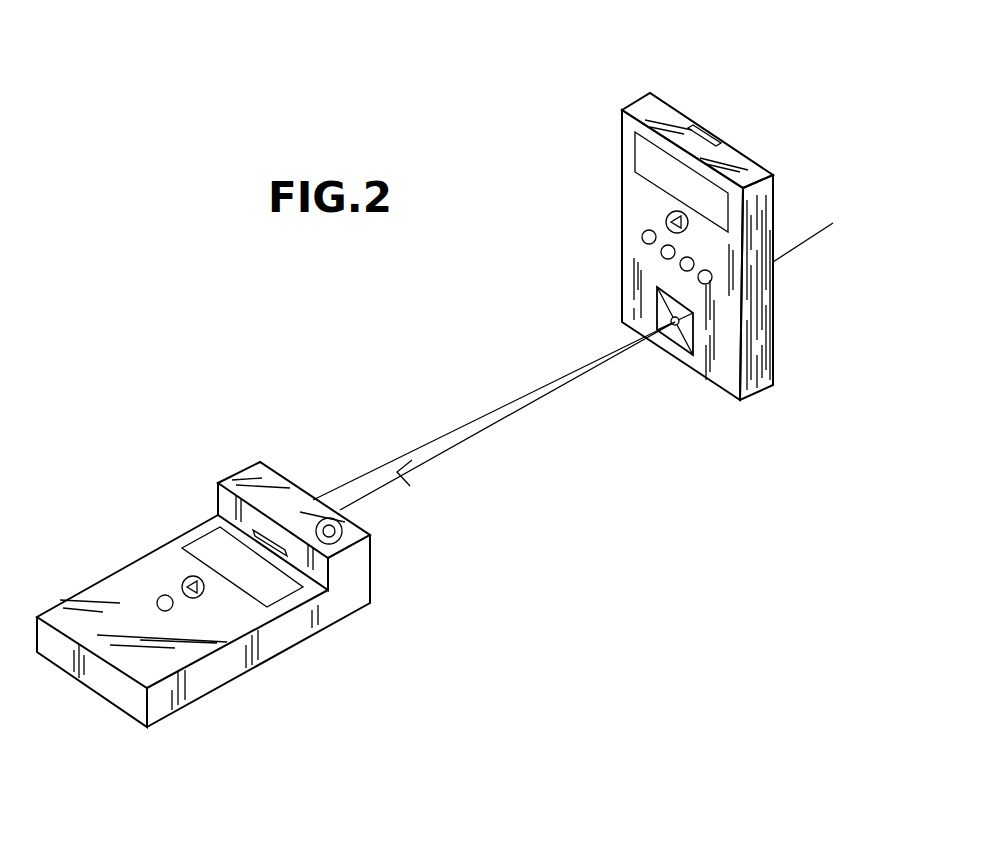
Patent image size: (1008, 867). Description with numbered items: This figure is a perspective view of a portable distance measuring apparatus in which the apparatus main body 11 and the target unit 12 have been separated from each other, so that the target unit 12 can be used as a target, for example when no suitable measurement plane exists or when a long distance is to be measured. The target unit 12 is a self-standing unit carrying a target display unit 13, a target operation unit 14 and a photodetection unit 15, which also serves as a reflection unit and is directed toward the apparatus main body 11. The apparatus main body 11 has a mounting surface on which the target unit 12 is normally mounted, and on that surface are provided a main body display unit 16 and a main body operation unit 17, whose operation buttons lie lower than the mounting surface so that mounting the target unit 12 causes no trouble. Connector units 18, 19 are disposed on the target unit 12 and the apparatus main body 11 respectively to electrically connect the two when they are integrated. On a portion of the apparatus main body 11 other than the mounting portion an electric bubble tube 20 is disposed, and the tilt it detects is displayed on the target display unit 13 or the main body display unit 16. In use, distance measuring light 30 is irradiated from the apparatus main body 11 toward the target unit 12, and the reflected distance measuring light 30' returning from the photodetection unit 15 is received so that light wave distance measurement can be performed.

The apparatus main body 11 is at (262, 460).
The target unit 12 is at (773, 195).
The target display unit 13 is at (635, 140).
The target operation unit 14 is at (632, 190).
The photodetection unit 15 is at (677, 347).
The main body display unit 16 is at (200, 532).
The main body operation unit 17 is at (138, 604).
The connector unit 18 is at (265, 553).
The connector unit 19 is at (708, 125).
The electric bubble tube 20 is at (345, 545).
The distance measuring light 30 is at (494, 411).
The reflected distance measuring light 30' is at (507, 416).